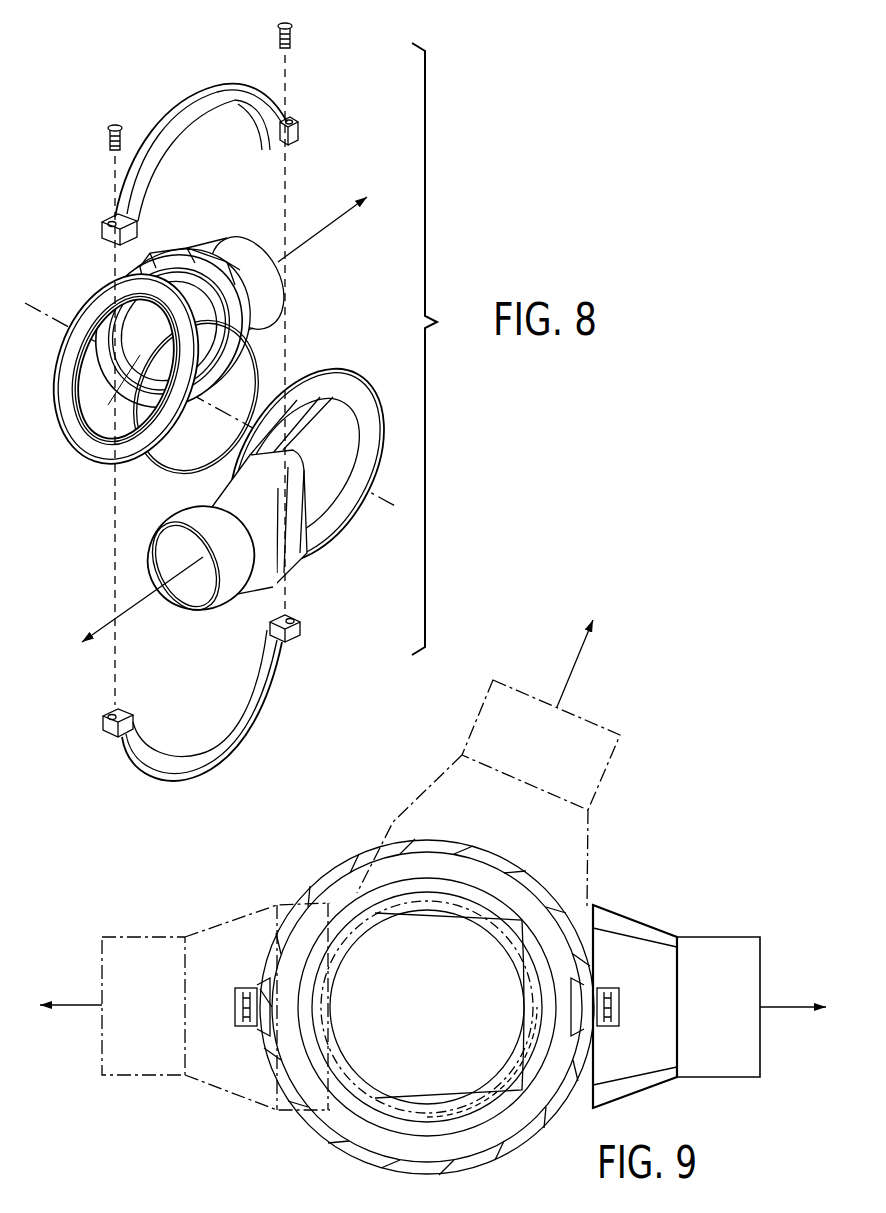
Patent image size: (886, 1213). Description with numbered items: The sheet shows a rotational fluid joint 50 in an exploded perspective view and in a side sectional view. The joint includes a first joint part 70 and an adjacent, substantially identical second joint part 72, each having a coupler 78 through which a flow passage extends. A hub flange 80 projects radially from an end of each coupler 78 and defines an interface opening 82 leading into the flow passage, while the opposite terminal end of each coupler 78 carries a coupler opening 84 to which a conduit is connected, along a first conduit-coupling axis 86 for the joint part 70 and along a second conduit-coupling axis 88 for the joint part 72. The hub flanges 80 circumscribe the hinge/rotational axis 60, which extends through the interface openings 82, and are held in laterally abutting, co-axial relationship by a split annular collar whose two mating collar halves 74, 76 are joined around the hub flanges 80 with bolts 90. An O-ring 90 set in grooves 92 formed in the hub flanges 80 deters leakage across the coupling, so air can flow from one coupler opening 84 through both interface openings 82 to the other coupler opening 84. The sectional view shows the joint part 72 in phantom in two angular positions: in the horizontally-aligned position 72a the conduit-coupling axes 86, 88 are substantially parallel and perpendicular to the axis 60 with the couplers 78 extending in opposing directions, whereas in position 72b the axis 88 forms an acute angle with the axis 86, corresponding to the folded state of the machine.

In FIG. 8, the rotational fluid joint 50 is at (440, 349).
In FIG. 9, the rotational fluid joint 50 is at (628, 822).
In FIG. 8, the hinge/rotational axis 60 is at (47, 302).
In FIG. 8, the first joint part 70 is at (192, 247).
In FIG. 9, the first joint part 70 is at (697, 932).
In FIG. 8, the second joint part 72 is at (267, 480).
In FIG. 9, the horizontally-aligned position of joint part 72a is at (130, 1078).
In FIG. 9, the folded position of joint part 72b is at (607, 723).
In FIG. 8, the collar half 74 is at (168, 114).
In FIG. 9, the collar half 74 is at (330, 873).
In FIG. 8, the collar half 76 is at (232, 740).
In FIG. 9, the collar half 76 is at (330, 1137).
In FIG. 8, the coupler 78 is at (225, 495).
In FIG. 9, the coupler 78 is at (630, 922).
In FIG. 8, the hub flange 80 is at (80, 445).
In FIG. 9, the hub flange 80 is at (441, 1161).
In FIG. 8, the interface opening 82 is at (113, 400).
In FIG. 9, the interface opening 82 is at (437, 1007).
In FIG. 8, the coupler opening 84 is at (195, 588).
In FIG. 8, the first conduit-coupling axis 86 is at (330, 228).
In FIG. 9, the first conduit-coupling axis 86 is at (786, 1006).
In FIG. 8, the second conduit-coupling axis 88 is at (138, 608).
In FIG. 9, the second conduit-coupling axis 88 is at (78, 1005).
In FIG. 8, the bolts / O-ring 90 is at (292, 37).
In FIG. 9, the bolts / O-ring 90 is at (330, 962).
In FIG. 8, the grooves 92 is at (70, 378).
In FIG. 9, the grooves 92 is at (429, 1009).